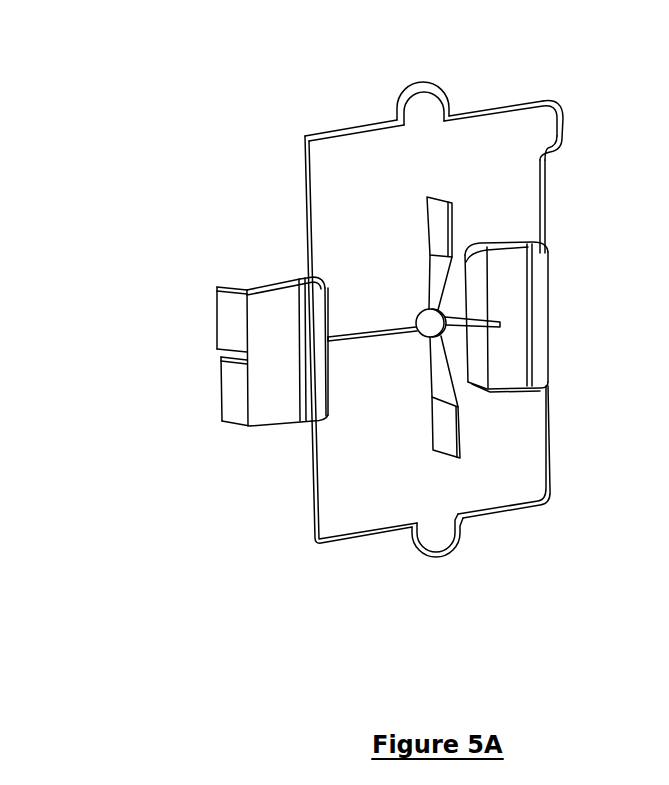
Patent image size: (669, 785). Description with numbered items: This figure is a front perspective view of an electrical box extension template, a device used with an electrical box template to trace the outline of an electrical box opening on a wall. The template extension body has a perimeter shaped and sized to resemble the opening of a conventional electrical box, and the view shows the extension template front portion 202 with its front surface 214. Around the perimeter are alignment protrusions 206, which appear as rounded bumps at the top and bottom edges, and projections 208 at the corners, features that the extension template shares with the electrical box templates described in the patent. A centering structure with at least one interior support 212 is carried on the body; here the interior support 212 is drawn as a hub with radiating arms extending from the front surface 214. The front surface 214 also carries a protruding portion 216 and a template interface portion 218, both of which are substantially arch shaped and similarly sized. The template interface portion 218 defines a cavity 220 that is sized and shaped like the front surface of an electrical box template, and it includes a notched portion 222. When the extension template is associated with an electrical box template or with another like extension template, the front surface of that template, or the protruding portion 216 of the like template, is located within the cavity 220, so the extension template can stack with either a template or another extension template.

The extension template front portion 202 is at (457, 355).
The alignment protrusions 206 is at (468, 329).
The projections 208 is at (587, 148).
The interior support 212 is at (414, 327).
The front surface 214 is at (384, 460).
The protruding portion 216 is at (546, 317).
The template interface portion 218 is at (181, 406).
The cavity 220 is at (275, 304).
The notched portion 222 is at (186, 313).